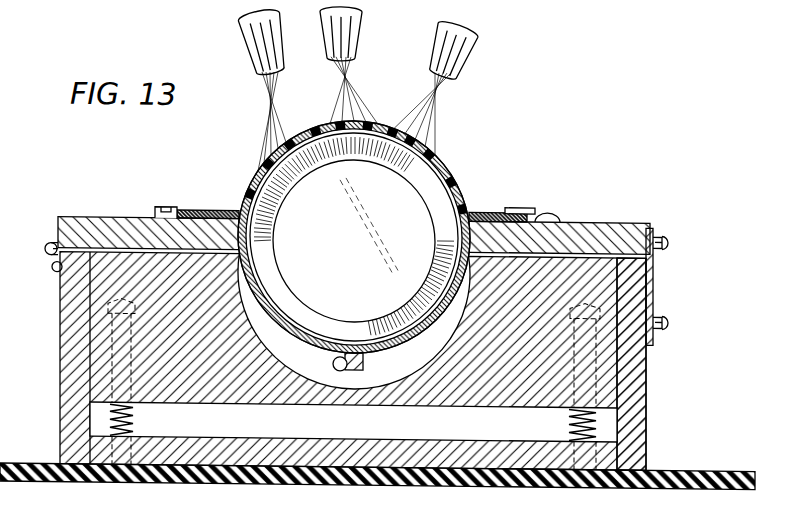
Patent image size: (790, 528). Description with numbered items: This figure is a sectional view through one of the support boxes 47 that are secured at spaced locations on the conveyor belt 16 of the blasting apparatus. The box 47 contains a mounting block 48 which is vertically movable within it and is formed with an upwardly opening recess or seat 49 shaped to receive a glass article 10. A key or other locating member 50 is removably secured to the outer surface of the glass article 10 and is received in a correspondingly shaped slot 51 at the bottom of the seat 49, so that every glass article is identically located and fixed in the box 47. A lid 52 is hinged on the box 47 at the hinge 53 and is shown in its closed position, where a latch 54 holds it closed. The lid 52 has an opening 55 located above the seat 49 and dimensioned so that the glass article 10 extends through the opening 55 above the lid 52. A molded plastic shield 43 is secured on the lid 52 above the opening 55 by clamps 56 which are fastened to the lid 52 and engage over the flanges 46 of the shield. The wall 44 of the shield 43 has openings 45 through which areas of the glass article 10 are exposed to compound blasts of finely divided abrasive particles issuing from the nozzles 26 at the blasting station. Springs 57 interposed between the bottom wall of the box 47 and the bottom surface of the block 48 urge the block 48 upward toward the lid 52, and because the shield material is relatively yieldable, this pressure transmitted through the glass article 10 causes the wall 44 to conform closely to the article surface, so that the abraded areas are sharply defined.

The glass article 10 is at (370, 207).
The conveyor belt 16 is at (586, 483).
The nozzles 26 is at (276, 37).
The shield 43 is at (463, 163).
The wall of the shield 44 is at (456, 145).
The openings 45 is at (296, 131).
The flanges of the shield 46 is at (216, 209).
The support box 47 is at (636, 396).
The mounting block 48 is at (607, 281).
The seat 49 is at (458, 279).
The locating member 50 is at (357, 348).
The slot 51 is at (343, 353).
The lid 52 is at (113, 229).
The hinge 53 is at (46, 252).
The latch 54 is at (656, 255).
The opening 55 is at (541, 206).
The clamps 56 is at (181, 203).
The springs 57 is at (132, 422).